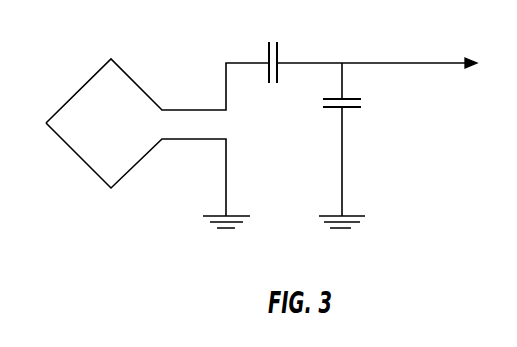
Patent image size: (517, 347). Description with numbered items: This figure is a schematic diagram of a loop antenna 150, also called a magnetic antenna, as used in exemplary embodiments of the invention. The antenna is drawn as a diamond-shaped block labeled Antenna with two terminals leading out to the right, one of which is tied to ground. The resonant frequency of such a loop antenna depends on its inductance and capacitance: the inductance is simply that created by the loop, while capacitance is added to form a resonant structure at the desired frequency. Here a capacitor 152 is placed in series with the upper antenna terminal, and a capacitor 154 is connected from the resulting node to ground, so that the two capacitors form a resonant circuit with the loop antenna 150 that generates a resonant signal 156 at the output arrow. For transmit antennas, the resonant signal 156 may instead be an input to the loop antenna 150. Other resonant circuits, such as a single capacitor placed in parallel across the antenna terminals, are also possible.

The loop antenna 150 is at (88, 81).
The capacitor 152 is at (268, 52).
The capacitor 154 is at (330, 108).
The resonant signal 156 is at (425, 62).